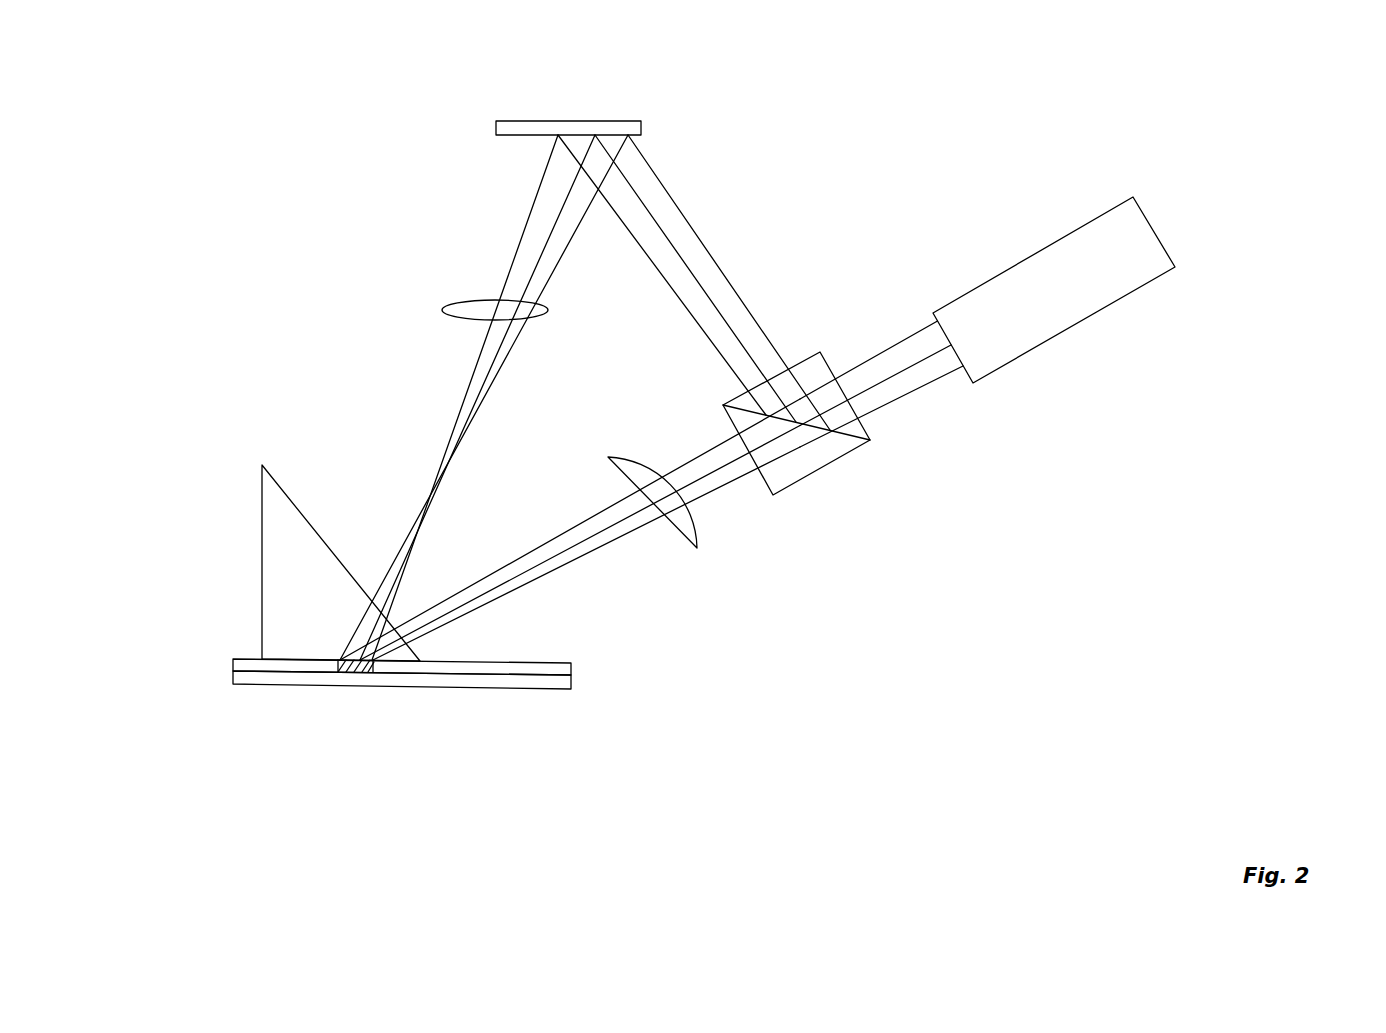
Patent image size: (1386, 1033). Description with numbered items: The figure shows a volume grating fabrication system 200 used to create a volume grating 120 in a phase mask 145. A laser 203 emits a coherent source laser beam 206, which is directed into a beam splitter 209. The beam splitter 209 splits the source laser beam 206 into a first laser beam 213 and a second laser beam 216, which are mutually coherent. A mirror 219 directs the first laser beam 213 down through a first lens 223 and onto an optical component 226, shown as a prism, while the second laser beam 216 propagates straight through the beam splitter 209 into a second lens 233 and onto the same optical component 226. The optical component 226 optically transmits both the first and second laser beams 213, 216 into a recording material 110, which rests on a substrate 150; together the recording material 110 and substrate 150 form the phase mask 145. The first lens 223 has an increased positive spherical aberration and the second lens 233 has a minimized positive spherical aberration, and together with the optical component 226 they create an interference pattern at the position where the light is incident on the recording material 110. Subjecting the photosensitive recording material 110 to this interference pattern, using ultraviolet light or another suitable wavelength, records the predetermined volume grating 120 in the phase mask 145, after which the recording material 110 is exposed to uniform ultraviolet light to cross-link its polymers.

The volume grating fabrication system 200 is at (232, 136).
The laser 203 is at (1054, 290).
The laser beam 206 is at (895, 384).
The beam splitter 209 is at (756, 423).
The first laser beam 213 is at (694, 282).
The second laser beam 216 is at (570, 529).
The mirror 219 is at (605, 114).
The first lens 223 is at (484, 397).
The optical component 226 is at (295, 563).
The second lens 233 is at (700, 502).
The recording material 110 is at (453, 656).
The substrate 150 is at (229, 660).
The phase mask 145 is at (425, 677).
The volume grating 120 is at (338, 705).